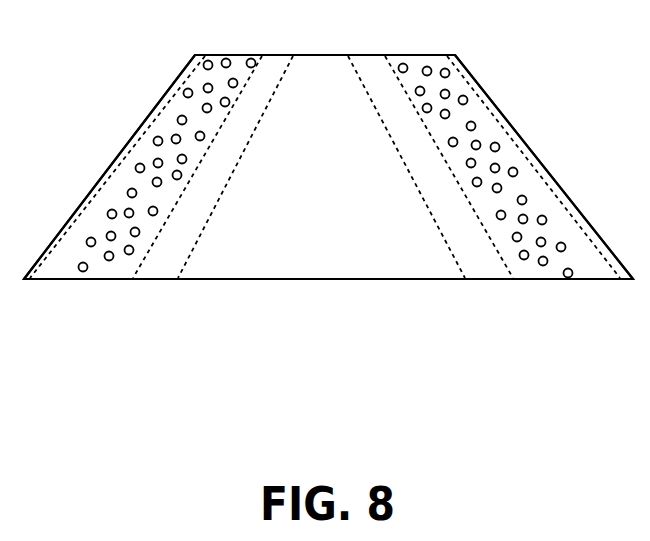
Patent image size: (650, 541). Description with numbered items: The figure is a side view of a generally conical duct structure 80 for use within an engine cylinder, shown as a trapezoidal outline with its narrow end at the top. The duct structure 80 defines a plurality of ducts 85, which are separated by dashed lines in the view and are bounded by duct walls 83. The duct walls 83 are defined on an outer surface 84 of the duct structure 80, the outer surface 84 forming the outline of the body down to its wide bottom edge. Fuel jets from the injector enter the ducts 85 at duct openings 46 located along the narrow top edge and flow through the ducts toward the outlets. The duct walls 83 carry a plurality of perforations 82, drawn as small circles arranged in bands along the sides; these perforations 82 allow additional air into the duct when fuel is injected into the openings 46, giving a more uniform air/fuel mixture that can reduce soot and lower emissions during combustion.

The duct openings 46 is at (230, 54).
The duct structure 80 is at (333, 58).
The perforations 82 is at (187, 159).
The duct walls 83 is at (167, 130).
The outer surface 84 is at (402, 238).
The ducts 85 is at (112, 198).